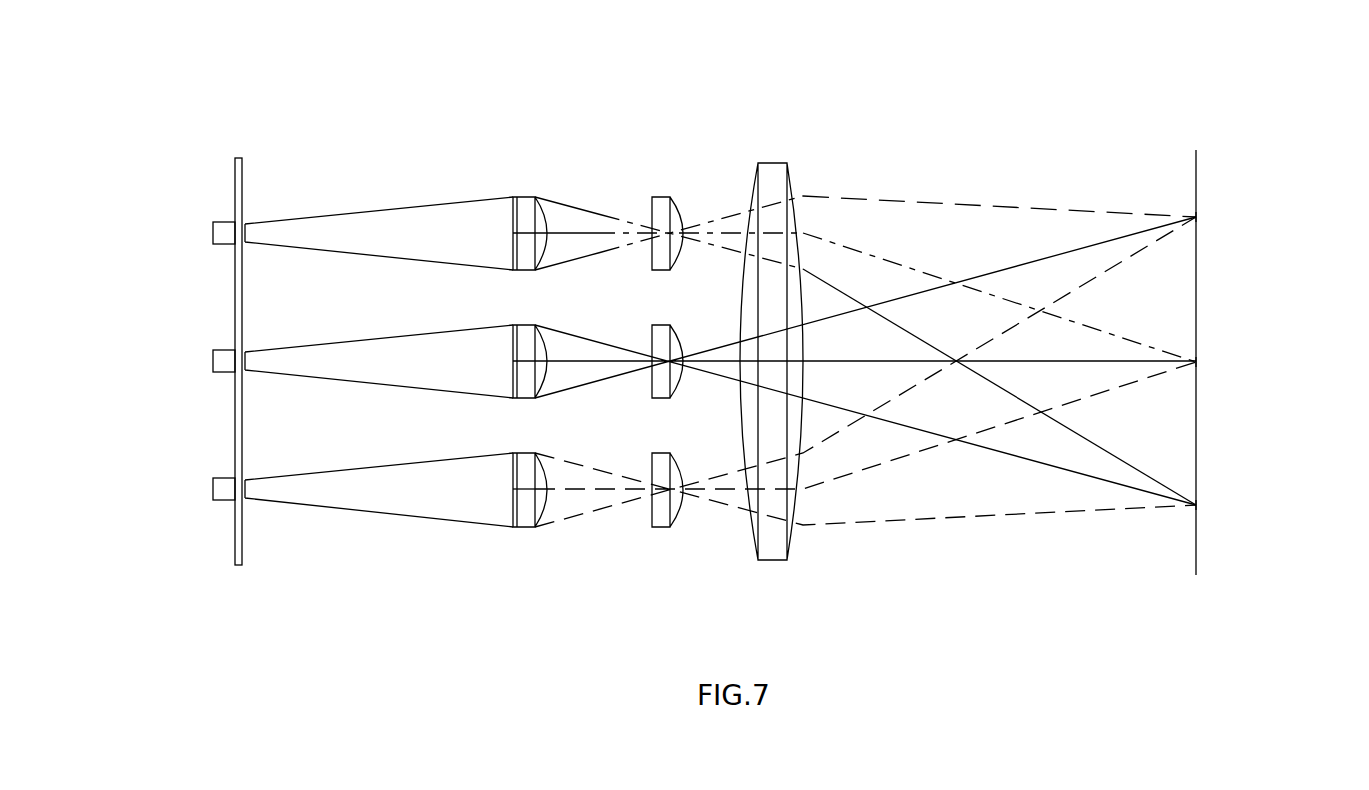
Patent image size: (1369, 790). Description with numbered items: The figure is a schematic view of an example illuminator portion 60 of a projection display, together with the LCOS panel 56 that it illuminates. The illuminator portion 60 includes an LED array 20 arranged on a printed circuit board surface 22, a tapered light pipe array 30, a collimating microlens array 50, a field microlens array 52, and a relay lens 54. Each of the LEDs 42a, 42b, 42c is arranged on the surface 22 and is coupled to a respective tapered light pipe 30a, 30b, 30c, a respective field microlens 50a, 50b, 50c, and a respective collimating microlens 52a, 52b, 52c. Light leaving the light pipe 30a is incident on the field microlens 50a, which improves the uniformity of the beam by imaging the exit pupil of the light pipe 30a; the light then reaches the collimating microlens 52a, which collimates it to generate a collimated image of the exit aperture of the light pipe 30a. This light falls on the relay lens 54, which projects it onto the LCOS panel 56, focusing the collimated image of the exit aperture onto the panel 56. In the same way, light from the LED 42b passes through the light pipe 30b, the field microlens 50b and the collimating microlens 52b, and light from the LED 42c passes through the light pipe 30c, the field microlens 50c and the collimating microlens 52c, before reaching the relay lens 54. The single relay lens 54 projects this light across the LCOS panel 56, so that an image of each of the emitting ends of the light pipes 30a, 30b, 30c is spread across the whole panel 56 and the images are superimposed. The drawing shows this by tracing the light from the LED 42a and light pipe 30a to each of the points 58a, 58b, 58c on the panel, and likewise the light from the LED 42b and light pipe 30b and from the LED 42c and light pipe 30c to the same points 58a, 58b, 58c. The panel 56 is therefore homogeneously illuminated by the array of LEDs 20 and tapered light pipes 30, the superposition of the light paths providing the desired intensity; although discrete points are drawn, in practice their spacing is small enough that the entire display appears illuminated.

The LED array 20 is at (195, 205).
The printed circuit board surface 22 is at (242, 547).
The tapered light pipe array 30 is at (335, 190).
The tapered light pipe 30a is at (408, 238).
The tapered light pipe 30b is at (400, 360).
The tapered light pipe 30c is at (395, 490).
The LED 42a is at (225, 240).
The LED 42b is at (225, 368).
The LED 42c is at (225, 496).
The collimating microlens array 50 is at (520, 163).
The field microlens 50a is at (527, 205).
The field microlens 50b is at (526, 338).
The field microlens 50c is at (526, 466).
The field microlens array 52 is at (658, 163).
The collimating microlens 52a is at (659, 204).
The collimating microlens 52b is at (659, 335).
The collimating microlens 52c is at (659, 465).
The relay lens 54 is at (773, 173).
The LCOS panel 56 is at (1197, 161).
The point 58a is at (1197, 217).
The point 58b is at (1197, 362).
The point 58c is at (1197, 505).
The illuminator portion 60 is at (436, 163).